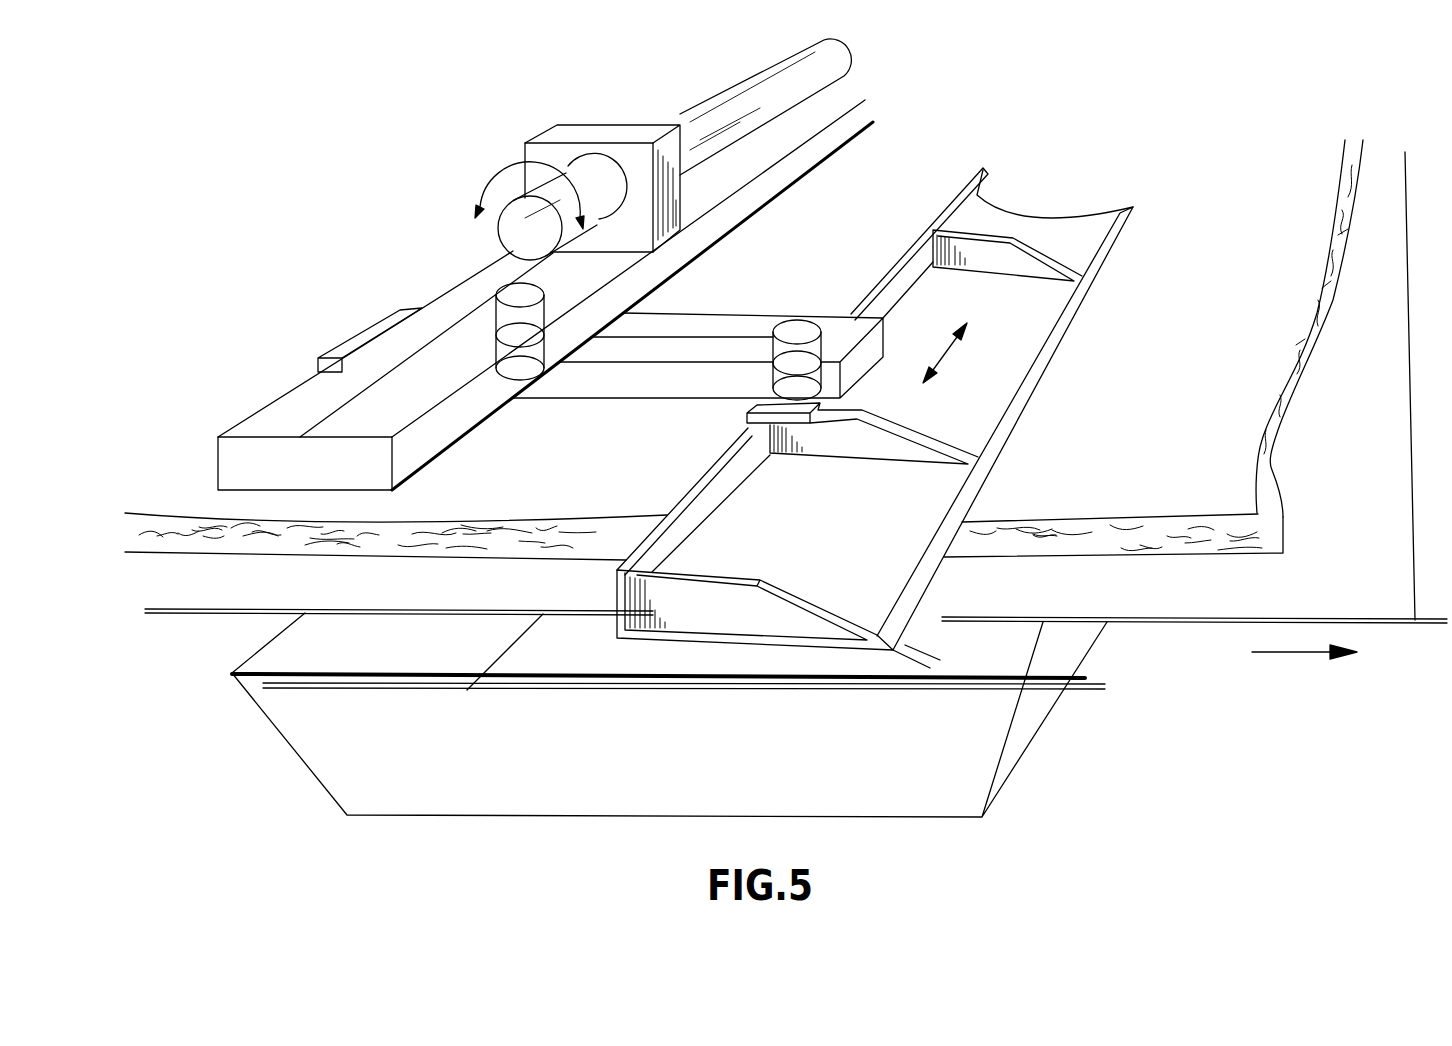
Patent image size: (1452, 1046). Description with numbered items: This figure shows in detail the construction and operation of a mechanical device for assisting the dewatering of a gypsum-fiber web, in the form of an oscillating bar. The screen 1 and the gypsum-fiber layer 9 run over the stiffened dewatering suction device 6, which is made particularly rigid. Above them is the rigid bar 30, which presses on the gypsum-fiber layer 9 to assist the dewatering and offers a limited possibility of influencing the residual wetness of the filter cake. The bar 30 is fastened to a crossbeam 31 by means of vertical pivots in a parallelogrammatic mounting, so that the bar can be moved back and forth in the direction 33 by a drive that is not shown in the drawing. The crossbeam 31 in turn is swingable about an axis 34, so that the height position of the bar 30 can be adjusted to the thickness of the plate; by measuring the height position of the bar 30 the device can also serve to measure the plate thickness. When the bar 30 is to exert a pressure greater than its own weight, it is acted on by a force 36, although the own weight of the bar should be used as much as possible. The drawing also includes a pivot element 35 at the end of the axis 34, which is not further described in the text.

The screen 1 is at (1177, 622).
The suction device 6 is at (537, 683).
The gypsum-fiber layer 9 is at (1270, 410).
The rigid bar 30 is at (723, 613).
The crossbeam 31 is at (300, 400).
The direction of movement 33 is at (946, 357).
The axis 34 is at (708, 96).
The drive block 35 is at (503, 183).
The force 36 is at (1070, 228).